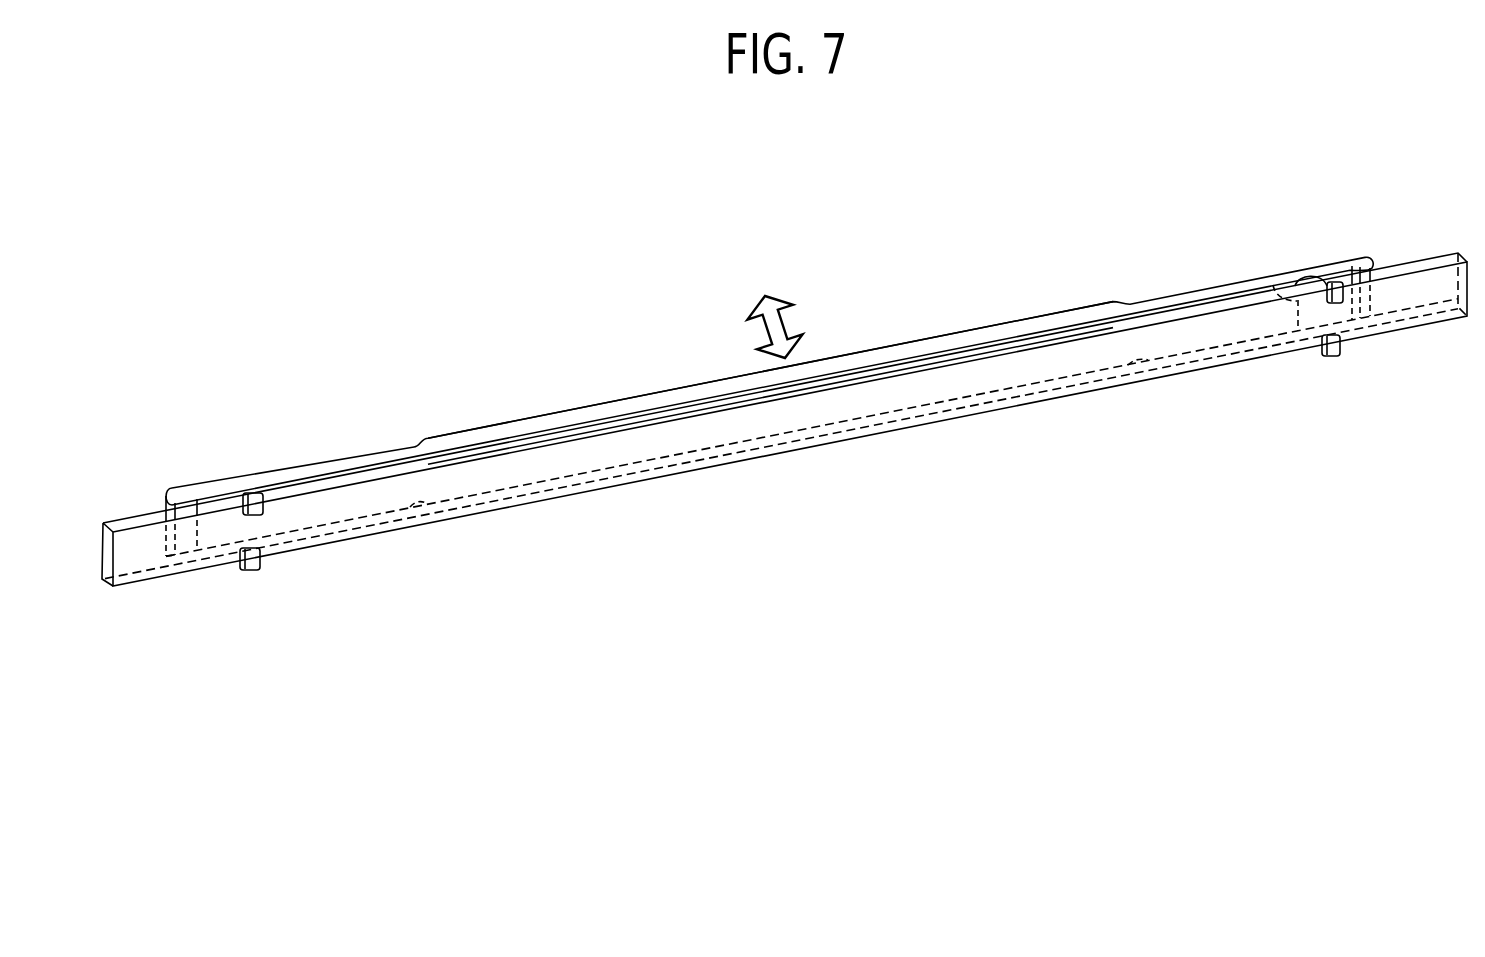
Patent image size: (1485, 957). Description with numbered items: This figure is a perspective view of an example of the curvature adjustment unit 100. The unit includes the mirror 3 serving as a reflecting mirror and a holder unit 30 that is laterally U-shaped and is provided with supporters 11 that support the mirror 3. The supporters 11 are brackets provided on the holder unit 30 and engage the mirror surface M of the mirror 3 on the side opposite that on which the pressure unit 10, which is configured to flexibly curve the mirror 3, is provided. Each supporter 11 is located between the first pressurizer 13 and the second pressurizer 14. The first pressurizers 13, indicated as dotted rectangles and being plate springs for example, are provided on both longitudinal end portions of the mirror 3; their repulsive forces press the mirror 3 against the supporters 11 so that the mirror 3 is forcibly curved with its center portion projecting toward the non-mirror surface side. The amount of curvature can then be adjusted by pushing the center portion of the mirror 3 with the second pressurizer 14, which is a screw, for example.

The curvature adjustment unit 100 is at (213, 301).
The mirror 3 is at (1455, 318).
The pressure unit 10 is at (250, 408).
The supporters 11 is at (263, 506).
The first pressurizer 13 is at (217, 517).
The second pressurizer 14 is at (774, 315).
The holder unit 30 is at (626, 409).
The mirror surface M is at (866, 404).